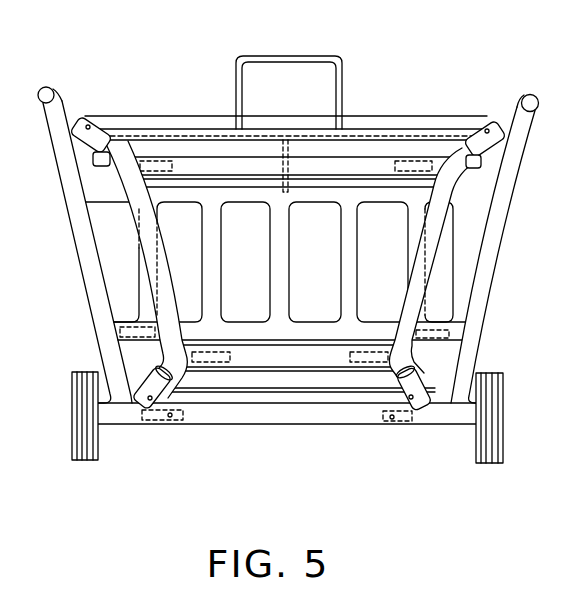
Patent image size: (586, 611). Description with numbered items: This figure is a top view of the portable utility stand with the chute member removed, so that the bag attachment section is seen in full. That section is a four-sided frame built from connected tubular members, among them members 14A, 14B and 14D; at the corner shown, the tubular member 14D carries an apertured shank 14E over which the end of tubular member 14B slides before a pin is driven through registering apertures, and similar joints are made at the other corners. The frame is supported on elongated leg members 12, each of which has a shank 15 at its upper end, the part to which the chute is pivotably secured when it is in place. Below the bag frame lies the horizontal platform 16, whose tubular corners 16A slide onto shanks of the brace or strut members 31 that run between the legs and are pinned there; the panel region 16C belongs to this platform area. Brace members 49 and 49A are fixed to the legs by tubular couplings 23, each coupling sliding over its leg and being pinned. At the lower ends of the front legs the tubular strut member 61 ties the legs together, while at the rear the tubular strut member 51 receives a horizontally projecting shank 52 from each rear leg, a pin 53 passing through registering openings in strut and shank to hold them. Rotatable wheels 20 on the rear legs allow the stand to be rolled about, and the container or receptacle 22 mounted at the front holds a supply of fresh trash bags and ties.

The elongated leg member 12 is at (49, 87).
The frame member 14A is at (422, 273).
The tubular member 14B is at (308, 357).
The tubular member 14D is at (146, 247).
The shank 14E is at (236, 355).
The shank 15 is at (90, 160).
The horizontal platform 16 is at (208, 195).
The corner of the platform member 16A is at (481, 208).
The basket upper back wall 16C is at (372, 167).
The rotatable wheel 20 is at (78, 423).
The container or receptacle 22 is at (283, 56).
The tubular coupling 23 is at (94, 117).
The brace or strut member 31 is at (471, 314).
The brace member 49 is at (436, 122).
The brace member 49A is at (268, 393).
The tubular strut member 51 is at (219, 423).
The horizontally projecting shank 52 is at (176, 422).
The pin 53 is at (400, 417).
The tubular strut member 61 is at (127, 113).